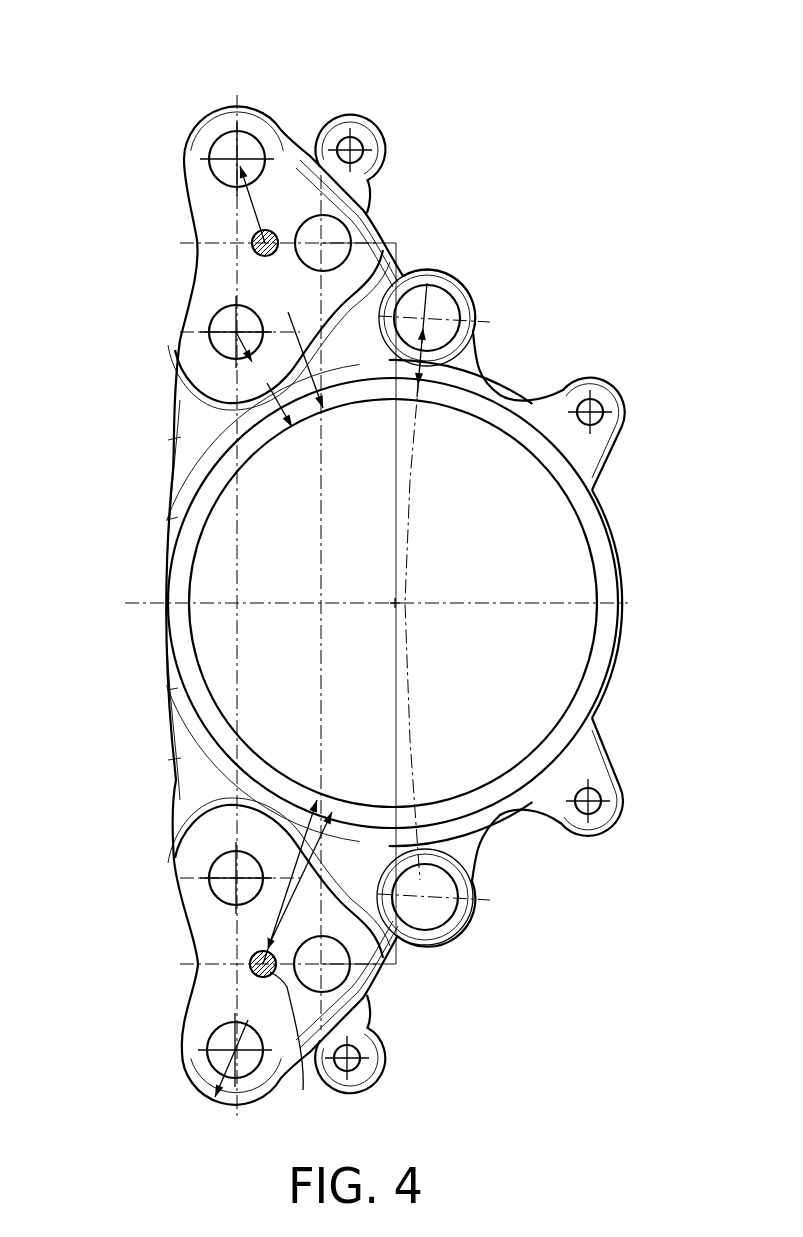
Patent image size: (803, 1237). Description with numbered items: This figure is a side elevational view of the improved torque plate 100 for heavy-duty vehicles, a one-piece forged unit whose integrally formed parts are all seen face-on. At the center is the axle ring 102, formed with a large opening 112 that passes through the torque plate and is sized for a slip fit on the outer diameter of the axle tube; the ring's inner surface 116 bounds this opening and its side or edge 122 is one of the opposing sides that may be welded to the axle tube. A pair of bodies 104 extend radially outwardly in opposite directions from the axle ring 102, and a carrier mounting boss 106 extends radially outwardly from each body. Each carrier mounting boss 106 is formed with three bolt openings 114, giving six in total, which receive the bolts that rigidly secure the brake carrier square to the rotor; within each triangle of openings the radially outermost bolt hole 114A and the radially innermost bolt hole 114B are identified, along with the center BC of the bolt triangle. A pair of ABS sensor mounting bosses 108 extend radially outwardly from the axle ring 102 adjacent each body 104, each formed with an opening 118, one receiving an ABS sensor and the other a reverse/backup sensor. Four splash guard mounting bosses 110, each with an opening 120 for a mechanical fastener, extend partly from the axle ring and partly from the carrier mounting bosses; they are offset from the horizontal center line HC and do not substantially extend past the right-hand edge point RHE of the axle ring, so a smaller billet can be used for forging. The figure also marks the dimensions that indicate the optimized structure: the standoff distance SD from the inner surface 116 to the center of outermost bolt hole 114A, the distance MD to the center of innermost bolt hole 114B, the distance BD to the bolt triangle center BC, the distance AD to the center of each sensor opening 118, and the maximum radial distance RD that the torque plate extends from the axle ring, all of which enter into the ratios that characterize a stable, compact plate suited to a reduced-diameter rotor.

The torque plate 100 is at (575, 153).
The axle ring 102 is at (612, 530).
The body 104 is at (165, 428).
The carrier mounting boss 106 is at (184, 180).
The ABS sensor mounting boss 108 is at (474, 312).
The splash guard mounting boss 110 is at (356, 117).
The opening 112 is at (584, 553).
The bolt opening 114 is at (343, 240).
The radially outermost bolt hole 114A is at (222, 149).
The radially innermost bolt hole 114B is at (220, 318).
The inner surface 116 is at (586, 679).
The opening 118 is at (452, 306).
The opening 120 is at (362, 152).
The side 122 is at (441, 603).
The standoff distance SD is at (281, 287).
The distance MD is at (264, 379).
The distance AD is at (428, 372).
The horizontal center line HC is at (397, 604).
The right-hand edge point RHE is at (623, 604).
The distance BD is at (290, 893).
The maximum radial distance RD is at (266, 978).
The center of the bolt triangle BC is at (294, 1046).